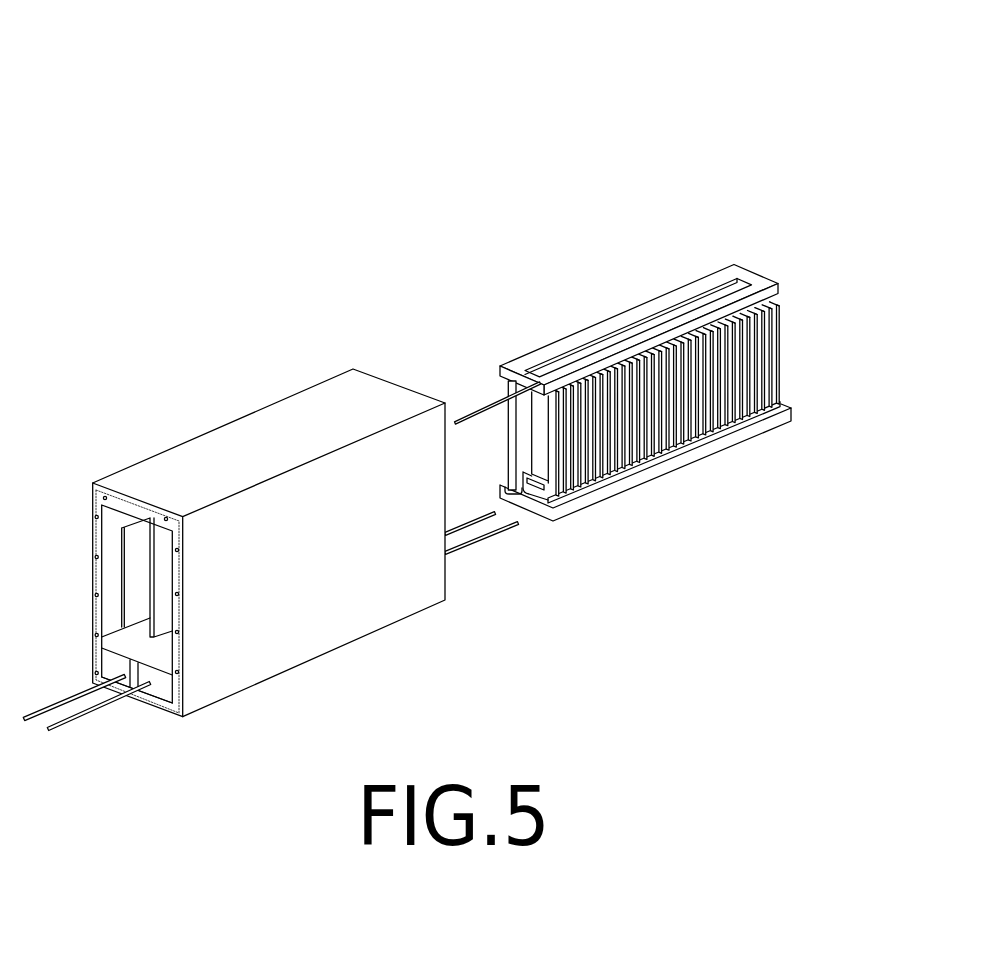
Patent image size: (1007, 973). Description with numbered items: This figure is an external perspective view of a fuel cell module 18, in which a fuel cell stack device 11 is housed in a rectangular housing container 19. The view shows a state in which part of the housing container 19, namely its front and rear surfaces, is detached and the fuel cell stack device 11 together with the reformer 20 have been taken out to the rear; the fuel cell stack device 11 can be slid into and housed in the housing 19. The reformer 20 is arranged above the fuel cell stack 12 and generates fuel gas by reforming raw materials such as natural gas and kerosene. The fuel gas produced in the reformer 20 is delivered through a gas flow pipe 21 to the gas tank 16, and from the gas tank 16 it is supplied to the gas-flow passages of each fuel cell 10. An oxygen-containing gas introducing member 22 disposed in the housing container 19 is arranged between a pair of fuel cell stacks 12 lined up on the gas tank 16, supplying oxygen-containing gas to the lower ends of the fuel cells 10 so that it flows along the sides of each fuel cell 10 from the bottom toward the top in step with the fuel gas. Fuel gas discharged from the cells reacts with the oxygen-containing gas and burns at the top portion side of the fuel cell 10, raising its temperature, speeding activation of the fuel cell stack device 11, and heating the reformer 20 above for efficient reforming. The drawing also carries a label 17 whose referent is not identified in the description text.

The fuel cell module 18 is at (203, 129).
The housing container 19 is at (272, 423).
The oxygen-containing gas introducing member 22 is at (166, 558).
The fuel cell 10 is at (782, 313).
The reformer 20 is at (512, 381).
The gas flow pipe 21 is at (508, 392).
The fuel cell stack device 11 is at (678, 252).
The heat sink base plate 17 is at (787, 392).
The gas tank 16 is at (560, 507).
The fuel cell stack 12 is at (577, 500).